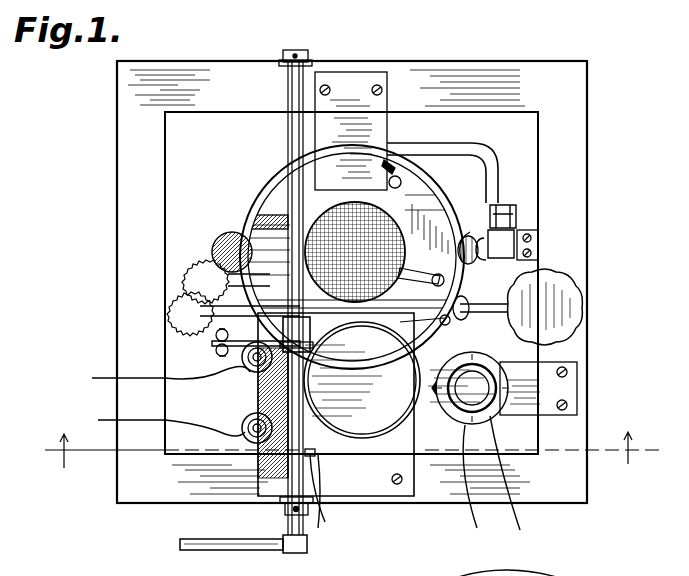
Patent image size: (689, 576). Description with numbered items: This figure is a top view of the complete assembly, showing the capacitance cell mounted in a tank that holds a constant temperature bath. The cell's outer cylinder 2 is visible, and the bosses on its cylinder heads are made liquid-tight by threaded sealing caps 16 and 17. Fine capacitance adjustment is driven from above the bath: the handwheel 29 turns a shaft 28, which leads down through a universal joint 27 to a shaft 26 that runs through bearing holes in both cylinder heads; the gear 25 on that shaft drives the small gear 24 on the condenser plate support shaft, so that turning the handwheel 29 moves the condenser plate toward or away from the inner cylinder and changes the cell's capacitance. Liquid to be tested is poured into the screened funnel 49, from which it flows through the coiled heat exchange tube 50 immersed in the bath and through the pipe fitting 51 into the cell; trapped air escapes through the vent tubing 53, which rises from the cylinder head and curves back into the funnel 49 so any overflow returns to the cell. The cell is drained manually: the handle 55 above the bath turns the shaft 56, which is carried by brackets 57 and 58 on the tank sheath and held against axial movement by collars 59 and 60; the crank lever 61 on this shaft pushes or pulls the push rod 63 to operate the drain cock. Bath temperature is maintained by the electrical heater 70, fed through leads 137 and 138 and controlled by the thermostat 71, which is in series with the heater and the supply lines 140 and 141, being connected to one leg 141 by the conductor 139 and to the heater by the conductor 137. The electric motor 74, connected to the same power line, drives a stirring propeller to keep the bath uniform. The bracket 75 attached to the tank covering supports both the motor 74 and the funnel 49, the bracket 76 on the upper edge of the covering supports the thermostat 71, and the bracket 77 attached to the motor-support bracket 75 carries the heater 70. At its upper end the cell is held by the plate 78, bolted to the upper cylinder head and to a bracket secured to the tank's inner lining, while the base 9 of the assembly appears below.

The outer cylinder 2 is at (346, 450).
The base 9 is at (520, 570).
The sealing cap 16 is at (470, 278).
The sealing cap 17 is at (231, 238).
The small gear 24 is at (208, 266).
The gear 25 is at (190, 300).
The shaft 26 is at (214, 336).
The universal joint 27 is at (442, 325).
The shaft 28 is at (490, 313).
The handwheel 29 is at (583, 300).
The screened funnel 49 is at (360, 204).
The coiled heat exchange tube 50 is at (424, 174).
The pipe fitting 51 is at (514, 209).
The vent tubing 53 is at (421, 283).
The handle 55 is at (240, 550).
The shaft 56 is at (288, 141).
The bracket 57 is at (282, 497).
The bracket 58 is at (311, 62).
The collar 59 is at (285, 515).
The collar 60 is at (287, 50).
The crank lever 61 is at (212, 348).
The push rod 63 is at (242, 361).
The electrical heater 70 is at (242, 424).
The thermostat 71 is at (480, 412).
The electric motor 74 is at (397, 346).
The bracket 75 is at (392, 497).
The bracket 76 is at (578, 374).
The bracket 77 is at (268, 389).
The plate 78 is at (538, 246).
The lead 137 is at (100, 420).
The lead 138 is at (93, 378).
The conductor 139 is at (513, 520).
The supply line 140 is at (320, 530).
The supply line 141 is at (328, 514).